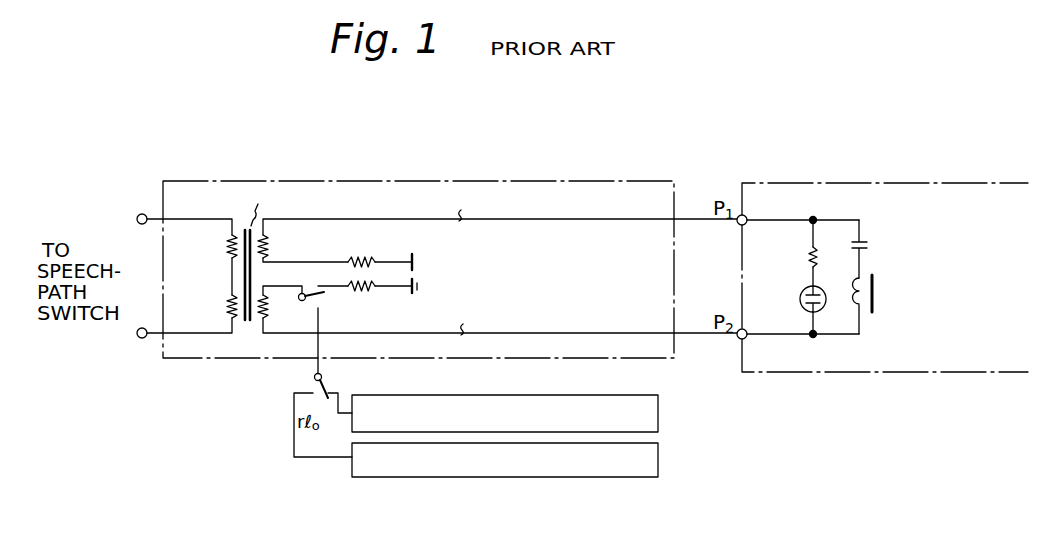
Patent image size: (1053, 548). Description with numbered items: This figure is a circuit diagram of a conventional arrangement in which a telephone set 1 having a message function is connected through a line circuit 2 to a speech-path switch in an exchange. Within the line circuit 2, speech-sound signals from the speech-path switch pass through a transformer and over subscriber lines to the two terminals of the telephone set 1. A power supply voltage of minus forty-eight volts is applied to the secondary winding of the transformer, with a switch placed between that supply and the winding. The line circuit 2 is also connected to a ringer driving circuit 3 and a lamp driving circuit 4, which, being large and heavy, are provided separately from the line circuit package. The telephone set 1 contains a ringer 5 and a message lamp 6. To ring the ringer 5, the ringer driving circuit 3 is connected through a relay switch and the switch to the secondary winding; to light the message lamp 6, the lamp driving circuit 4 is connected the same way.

The telephone set 1 is at (748, 180).
The line circuit 2 is at (346, 180).
The ringer driving circuit 3 is at (470, 395).
The lamp driving circuit 4 is at (463, 478).
The ringer 5 is at (877, 291).
The message lamp 6 is at (800, 299).